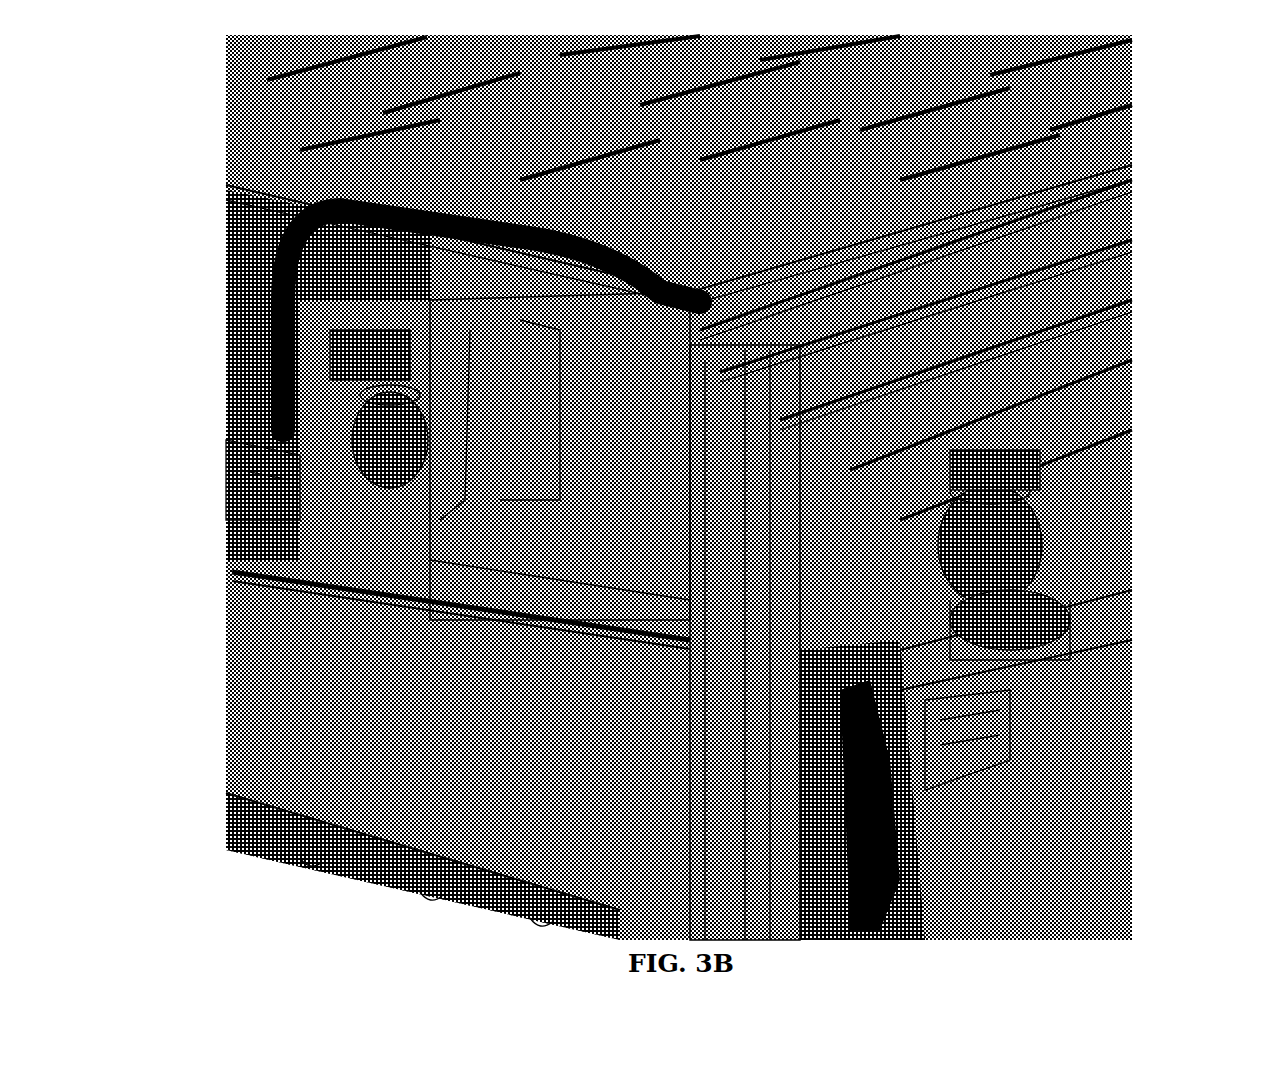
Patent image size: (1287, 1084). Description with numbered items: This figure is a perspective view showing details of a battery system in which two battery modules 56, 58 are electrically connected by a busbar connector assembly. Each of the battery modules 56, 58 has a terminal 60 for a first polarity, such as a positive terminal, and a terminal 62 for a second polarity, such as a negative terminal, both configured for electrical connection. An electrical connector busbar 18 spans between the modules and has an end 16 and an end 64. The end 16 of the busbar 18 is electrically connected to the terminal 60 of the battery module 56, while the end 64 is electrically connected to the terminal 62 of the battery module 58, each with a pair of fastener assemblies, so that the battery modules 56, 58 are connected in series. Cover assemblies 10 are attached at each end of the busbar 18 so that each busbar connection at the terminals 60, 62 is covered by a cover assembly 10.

The cover assembly 10 is at (266, 378).
The end 16 is at (1066, 571).
The electrical connector busbar 18 is at (682, 338).
The battery module 56 is at (1110, 390).
The battery module 58 is at (248, 132).
The terminal 60 is at (955, 720).
The terminal 62 is at (353, 580).
The end 64 is at (226, 470).